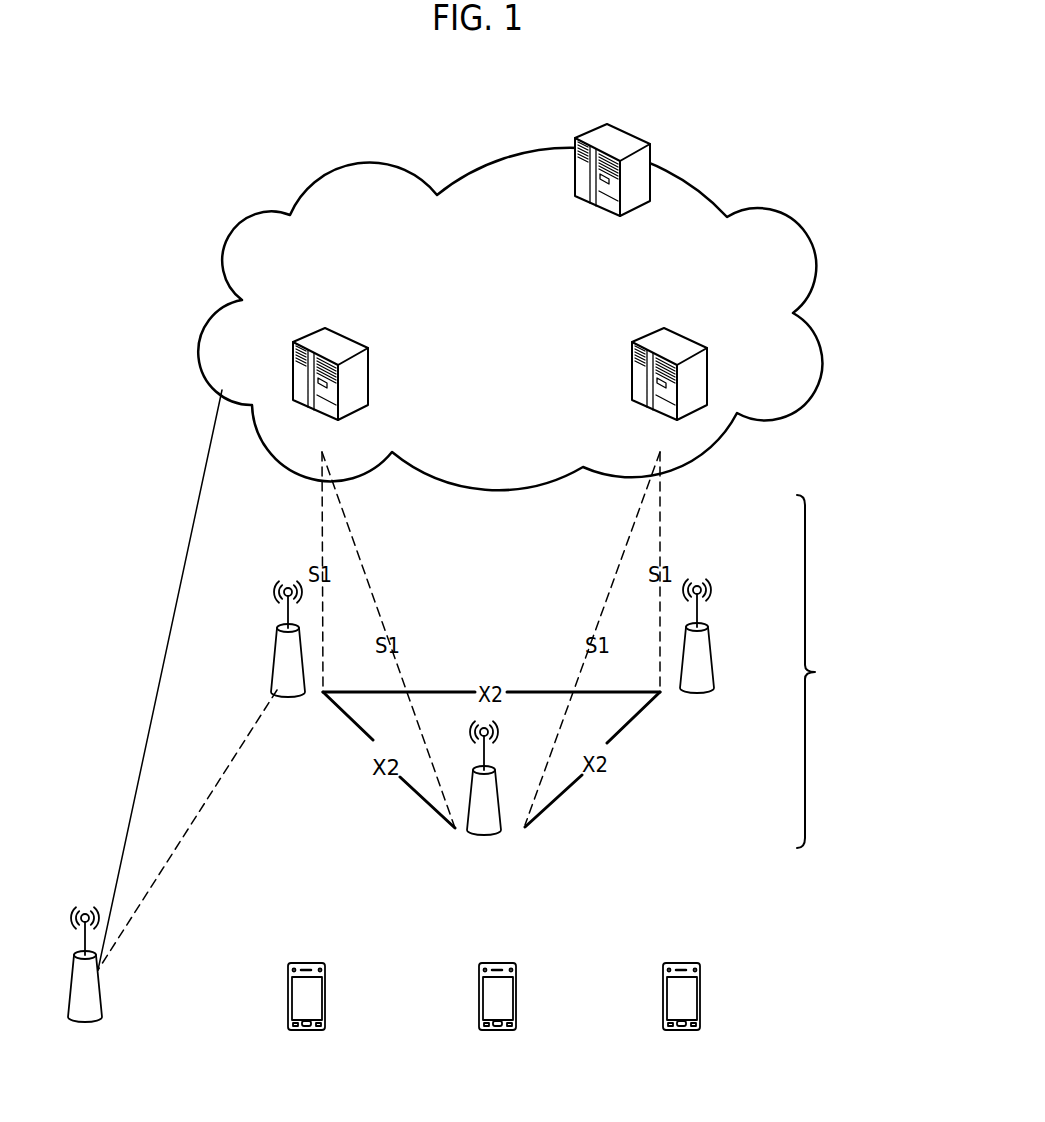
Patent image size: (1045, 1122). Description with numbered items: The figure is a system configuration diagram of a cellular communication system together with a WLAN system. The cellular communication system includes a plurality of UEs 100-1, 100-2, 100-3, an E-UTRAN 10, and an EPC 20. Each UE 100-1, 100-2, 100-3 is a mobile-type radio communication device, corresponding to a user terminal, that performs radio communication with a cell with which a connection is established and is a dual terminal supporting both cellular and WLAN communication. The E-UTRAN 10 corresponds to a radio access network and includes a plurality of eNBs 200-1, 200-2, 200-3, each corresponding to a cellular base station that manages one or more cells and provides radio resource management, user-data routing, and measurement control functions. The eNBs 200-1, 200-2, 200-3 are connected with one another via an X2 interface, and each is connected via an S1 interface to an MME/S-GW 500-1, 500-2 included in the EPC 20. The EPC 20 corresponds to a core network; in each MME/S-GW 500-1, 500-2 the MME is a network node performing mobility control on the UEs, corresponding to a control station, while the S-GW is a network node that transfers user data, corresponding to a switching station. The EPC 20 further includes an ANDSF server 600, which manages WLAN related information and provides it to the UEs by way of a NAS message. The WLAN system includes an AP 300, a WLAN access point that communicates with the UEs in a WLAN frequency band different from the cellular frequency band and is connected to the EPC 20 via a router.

The E-UTRAN 10 is at (850, 671).
The EPC 20 is at (707, 185).
The UE 100-1 is at (310, 963).
The UE 100-2 is at (500, 963).
The UE 100-3 is at (707, 941).
The eNB 200-1 is at (276, 662).
The eNB 200-2 is at (503, 812).
The eNB 200-3 is at (708, 640).
The AP 300 is at (100, 995).
The MME/S-GW 500-1 is at (355, 342).
The MME/S-GW 500-2 is at (678, 342).
The ANDSF server 600 is at (618, 123).